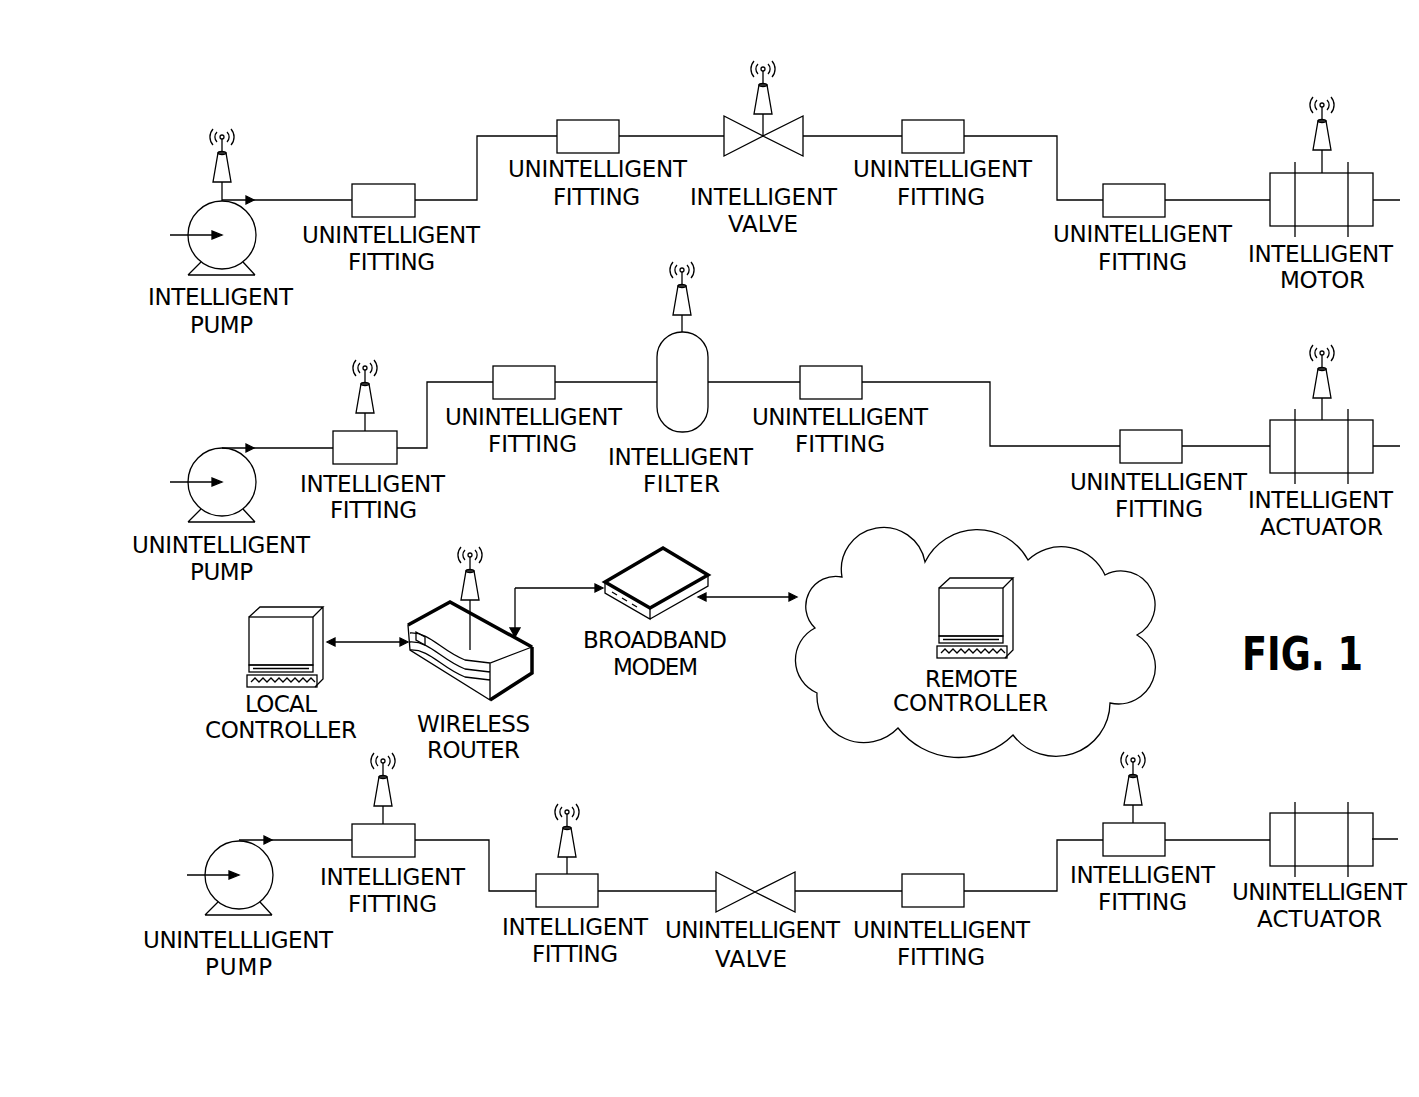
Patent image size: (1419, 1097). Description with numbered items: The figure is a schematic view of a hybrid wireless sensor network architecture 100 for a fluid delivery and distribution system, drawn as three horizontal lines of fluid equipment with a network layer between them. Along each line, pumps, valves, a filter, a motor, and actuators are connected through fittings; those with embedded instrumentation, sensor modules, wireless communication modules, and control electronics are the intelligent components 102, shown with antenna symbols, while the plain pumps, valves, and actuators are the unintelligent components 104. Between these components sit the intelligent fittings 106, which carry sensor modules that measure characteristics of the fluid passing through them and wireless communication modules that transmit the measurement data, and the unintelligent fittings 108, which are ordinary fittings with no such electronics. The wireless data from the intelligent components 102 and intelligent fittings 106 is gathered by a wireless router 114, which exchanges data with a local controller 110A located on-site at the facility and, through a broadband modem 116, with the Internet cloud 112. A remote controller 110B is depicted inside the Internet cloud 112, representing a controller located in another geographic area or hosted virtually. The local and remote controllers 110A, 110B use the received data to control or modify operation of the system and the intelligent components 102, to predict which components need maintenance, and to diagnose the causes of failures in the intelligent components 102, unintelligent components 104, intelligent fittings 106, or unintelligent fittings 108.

The hybrid wireless sensor network architecture 100 is at (318, 102).
The intelligent components 102 is at (202, 200).
The unintelligent components 104 is at (207, 448).
The intelligent fittings 106 is at (347, 431).
The unintelligent fittings 108 is at (382, 184).
The local controller 110A is at (248, 643).
The remote controller 110B is at (963, 578).
The Internet cloud 112 is at (1155, 592).
The wireless router 114 is at (430, 613).
The broadband modem 116 is at (643, 560).